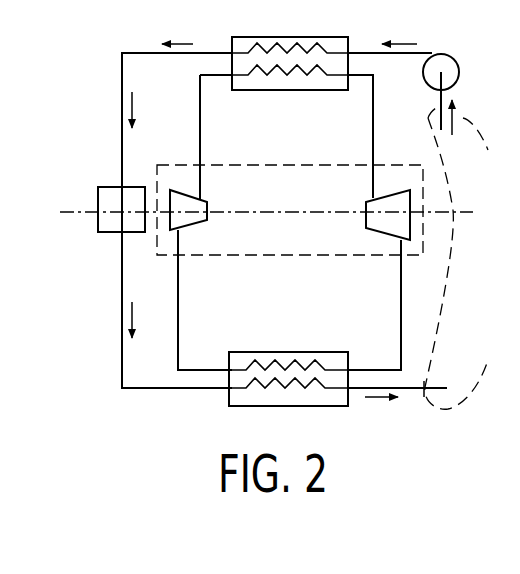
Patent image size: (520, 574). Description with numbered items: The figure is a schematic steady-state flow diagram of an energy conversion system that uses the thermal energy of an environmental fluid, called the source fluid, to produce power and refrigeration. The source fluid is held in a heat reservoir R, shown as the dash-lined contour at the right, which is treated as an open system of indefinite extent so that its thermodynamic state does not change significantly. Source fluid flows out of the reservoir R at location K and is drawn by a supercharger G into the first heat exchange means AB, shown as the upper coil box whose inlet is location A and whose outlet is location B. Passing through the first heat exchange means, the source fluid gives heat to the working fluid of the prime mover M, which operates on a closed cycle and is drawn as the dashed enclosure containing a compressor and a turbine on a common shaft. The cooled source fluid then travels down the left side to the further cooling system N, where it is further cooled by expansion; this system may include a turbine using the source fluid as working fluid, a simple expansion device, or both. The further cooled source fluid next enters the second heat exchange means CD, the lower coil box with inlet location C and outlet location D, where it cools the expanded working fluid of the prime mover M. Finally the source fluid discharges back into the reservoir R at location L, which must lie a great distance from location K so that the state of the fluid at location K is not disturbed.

The location A (inlet of first heat exchange means) A is at (386, 39).
The location B (outlet of first heat exchange means) B is at (191, 39).
The location C (inlet of second heat exchange means) C is at (217, 401).
The location D (outlet of second heat exchange means) D is at (372, 406).
The supercharger G is at (457, 68).
The location K is at (452, 117).
The location L is at (433, 380).
The prime mover M is at (288, 165).
The further cooling system N is at (108, 187).
The heat reservoir R is at (456, 258).